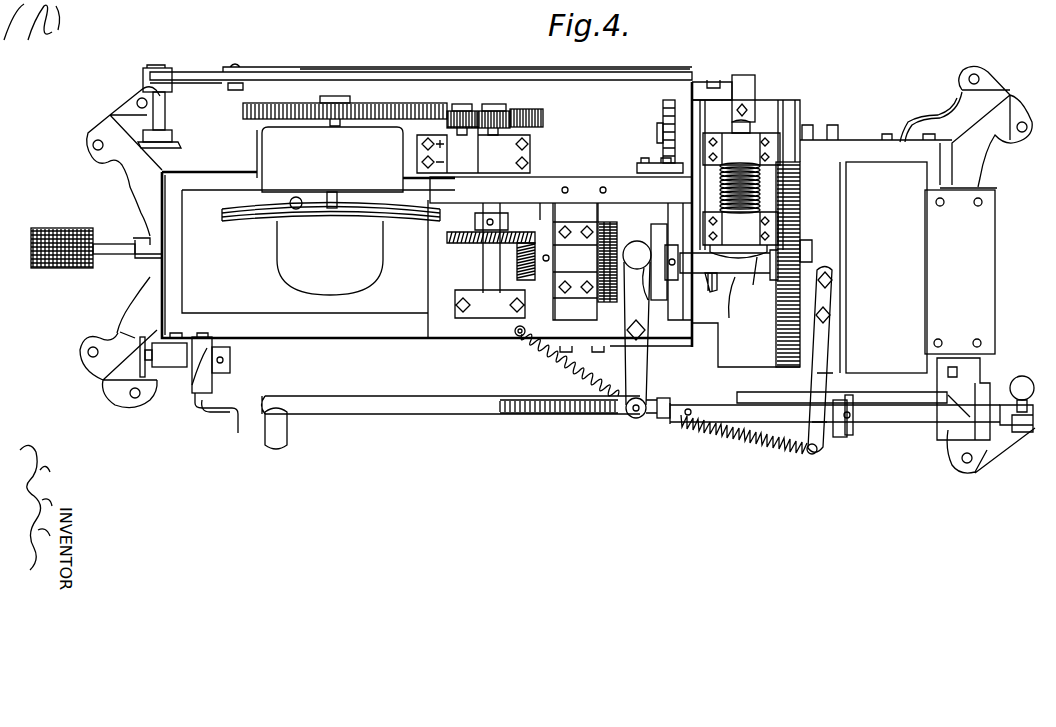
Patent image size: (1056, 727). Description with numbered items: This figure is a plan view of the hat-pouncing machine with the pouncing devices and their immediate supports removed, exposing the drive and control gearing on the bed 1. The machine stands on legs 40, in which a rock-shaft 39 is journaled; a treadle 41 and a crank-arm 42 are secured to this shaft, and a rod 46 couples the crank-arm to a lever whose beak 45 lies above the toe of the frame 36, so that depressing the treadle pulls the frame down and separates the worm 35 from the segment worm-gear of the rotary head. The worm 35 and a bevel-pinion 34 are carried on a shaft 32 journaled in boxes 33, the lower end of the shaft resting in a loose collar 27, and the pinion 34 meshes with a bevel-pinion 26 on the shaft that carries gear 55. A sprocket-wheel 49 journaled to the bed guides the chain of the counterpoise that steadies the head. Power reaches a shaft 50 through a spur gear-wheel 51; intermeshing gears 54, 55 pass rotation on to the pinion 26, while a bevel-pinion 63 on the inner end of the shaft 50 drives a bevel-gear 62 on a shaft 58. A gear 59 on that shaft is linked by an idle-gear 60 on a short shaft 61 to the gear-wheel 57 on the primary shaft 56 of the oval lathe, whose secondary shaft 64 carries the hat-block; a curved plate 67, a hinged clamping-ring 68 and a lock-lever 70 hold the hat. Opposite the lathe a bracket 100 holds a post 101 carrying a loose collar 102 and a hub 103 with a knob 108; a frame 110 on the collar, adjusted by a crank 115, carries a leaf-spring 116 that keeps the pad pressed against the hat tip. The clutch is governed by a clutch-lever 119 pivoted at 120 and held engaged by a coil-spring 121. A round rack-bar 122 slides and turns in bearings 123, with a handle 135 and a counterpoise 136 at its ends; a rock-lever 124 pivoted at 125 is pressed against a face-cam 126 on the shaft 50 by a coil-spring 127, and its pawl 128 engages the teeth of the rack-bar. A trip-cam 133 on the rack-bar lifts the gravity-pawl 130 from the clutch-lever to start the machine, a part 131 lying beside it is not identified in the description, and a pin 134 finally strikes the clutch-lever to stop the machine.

The bed 1 is at (162, 264).
The bevel-pinion 26 is at (714, 291).
The collar 27 is at (737, 300).
The shaft 32 is at (752, 125).
The boxes 33 is at (741, 179).
The bevel-pinion 34 is at (753, 285).
The worm 35 is at (765, 180).
The frame 36 is at (755, 94).
The rock-shaft 39 is at (167, 105).
The legs 40 is at (127, 187).
The treadle 41 is at (56, 228).
The crank-arm 42 is at (192, 72).
The beak 45 is at (722, 80).
The rod 46 is at (411, 69).
The sprocket-wheel 49 is at (663, 110).
The shaft 50 is at (721, 262).
The spur gear-wheel 51 is at (802, 255).
The gear 54 is at (575, 261).
The gear 55 is at (598, 302).
The primary shaft of the oval lathe 56 is at (336, 96).
The gear-wheel 57 is at (273, 103).
The shaft 58 is at (498, 104).
The gear 59 is at (530, 106).
The idle-gear 60 is at (443, 111).
The short shaft 61 is at (462, 104).
The bevel-gear 62 is at (472, 243).
The bevel-pinion 63 is at (522, 276).
The secondary shaft of the oval lathe 64 is at (322, 192).
The metal plate 67 is at (225, 214).
The clamping-ring 68 is at (258, 218).
The lock-lever 70 is at (232, 201).
The bracket 100 is at (230, 340).
The post 101 is at (230, 359).
The collar 102 is at (183, 362).
The hub 103 is at (155, 353).
The knob 108 is at (140, 345).
The frame 110 is at (212, 379).
The crank 115 is at (238, 432).
The leaf-spring 116 is at (196, 366).
The clutch-lever 119 is at (830, 340).
The pivot 120 is at (833, 313).
The coil-spring 121 is at (770, 445).
The rack-bar 122 is at (375, 404).
The bearings 123 is at (666, 420).
The rock-lever 124 is at (637, 323).
The pivot 125 is at (645, 330).
The face-cam 126 is at (656, 232).
The coil-spring 127 is at (545, 345).
The spring-actuated pawl 128 is at (630, 416).
The gravity-pawl 130 is at (782, 394).
The beam 131 is at (725, 398).
The trip-cam 133 is at (848, 437).
The pin 134 is at (698, 430).
The handle 135 is at (288, 437).
The counterpoise 136 is at (1022, 376).